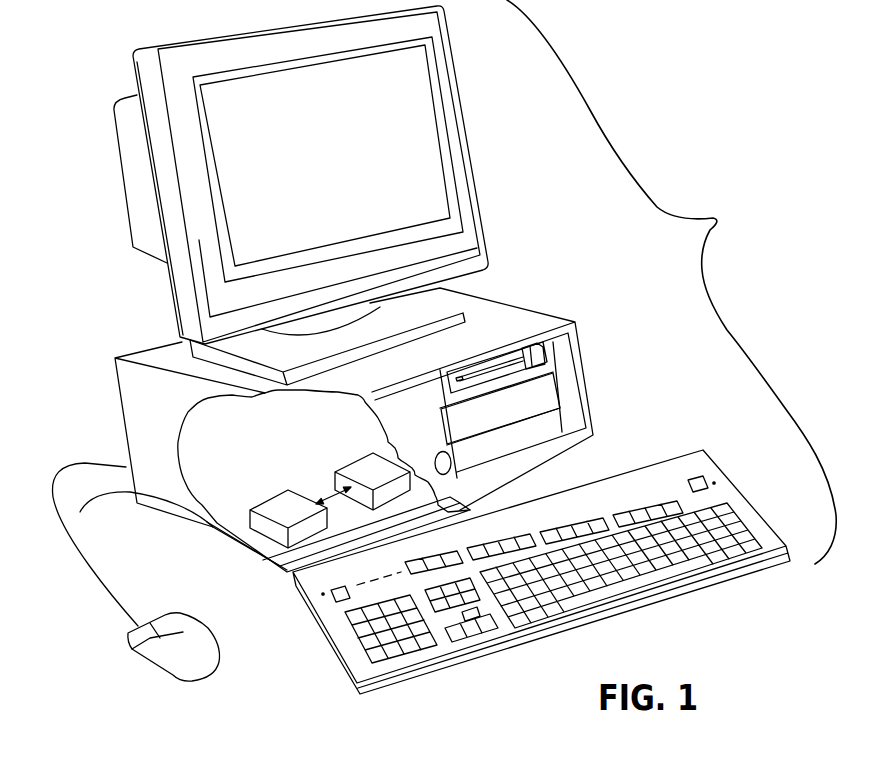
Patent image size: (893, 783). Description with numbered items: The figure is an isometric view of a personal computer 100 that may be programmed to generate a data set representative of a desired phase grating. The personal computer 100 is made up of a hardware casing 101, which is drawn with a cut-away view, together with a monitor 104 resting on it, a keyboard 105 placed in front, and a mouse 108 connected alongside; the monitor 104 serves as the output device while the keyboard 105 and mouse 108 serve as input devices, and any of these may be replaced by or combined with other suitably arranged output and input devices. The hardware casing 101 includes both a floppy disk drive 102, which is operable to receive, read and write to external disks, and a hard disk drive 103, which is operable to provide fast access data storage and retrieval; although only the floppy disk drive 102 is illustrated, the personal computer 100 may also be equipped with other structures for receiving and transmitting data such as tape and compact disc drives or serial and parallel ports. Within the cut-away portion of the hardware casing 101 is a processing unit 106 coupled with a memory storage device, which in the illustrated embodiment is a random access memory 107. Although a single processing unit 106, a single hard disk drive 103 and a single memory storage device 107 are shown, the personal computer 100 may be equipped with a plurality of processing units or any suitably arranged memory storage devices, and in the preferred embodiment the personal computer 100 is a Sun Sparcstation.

The personal computer 100 is at (671, 282).
The hardware casing 101 is at (562, 315).
The floppy disk drive 102 is at (548, 356).
The hard disk drive 103 is at (513, 393).
The monitor 104 is at (165, 283).
The keyboard 105 is at (747, 444).
The processing unit 106 is at (348, 467).
The random access memory 107 is at (257, 503).
The mouse 108 is at (127, 633).